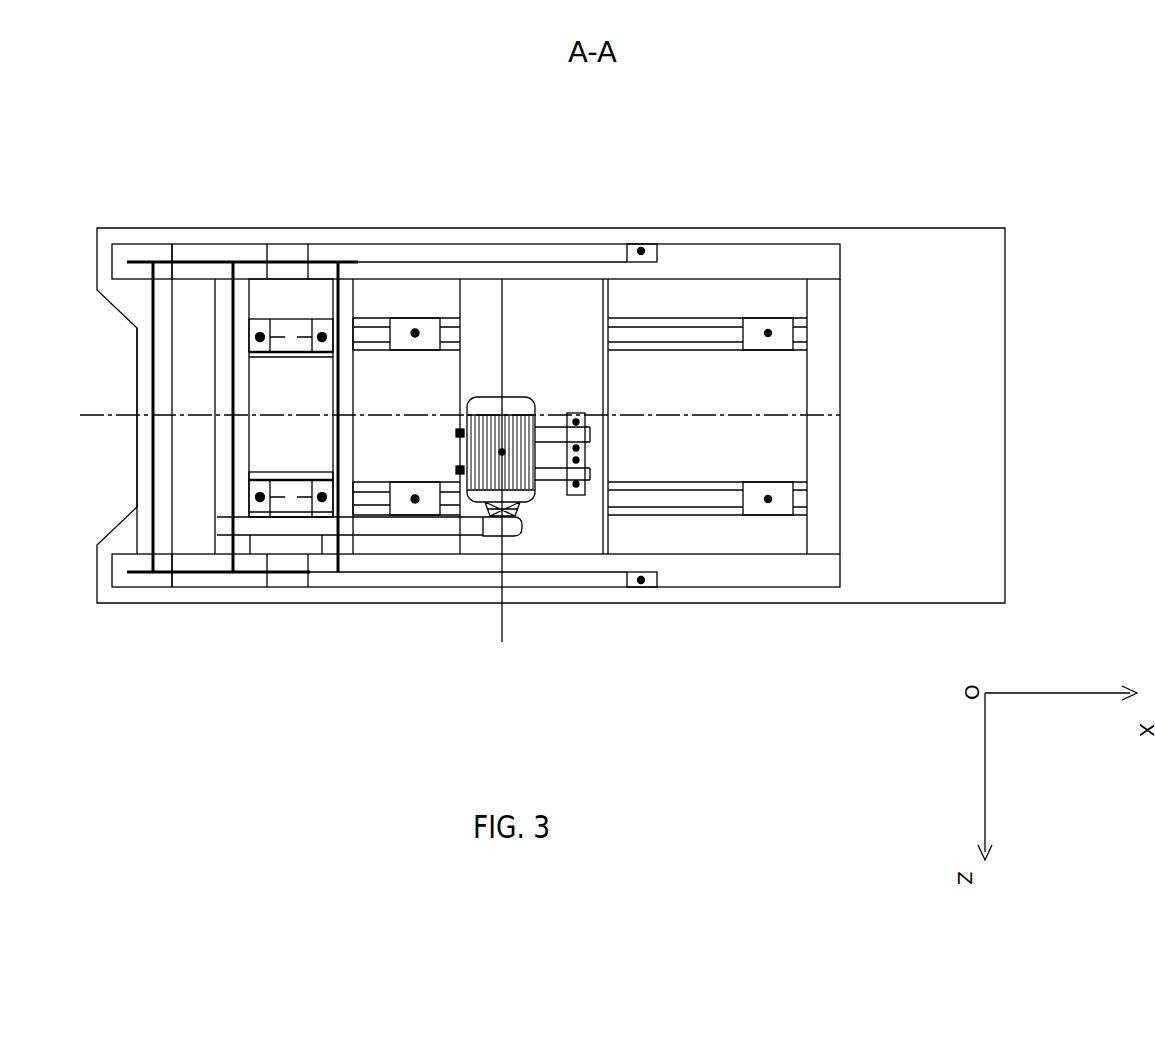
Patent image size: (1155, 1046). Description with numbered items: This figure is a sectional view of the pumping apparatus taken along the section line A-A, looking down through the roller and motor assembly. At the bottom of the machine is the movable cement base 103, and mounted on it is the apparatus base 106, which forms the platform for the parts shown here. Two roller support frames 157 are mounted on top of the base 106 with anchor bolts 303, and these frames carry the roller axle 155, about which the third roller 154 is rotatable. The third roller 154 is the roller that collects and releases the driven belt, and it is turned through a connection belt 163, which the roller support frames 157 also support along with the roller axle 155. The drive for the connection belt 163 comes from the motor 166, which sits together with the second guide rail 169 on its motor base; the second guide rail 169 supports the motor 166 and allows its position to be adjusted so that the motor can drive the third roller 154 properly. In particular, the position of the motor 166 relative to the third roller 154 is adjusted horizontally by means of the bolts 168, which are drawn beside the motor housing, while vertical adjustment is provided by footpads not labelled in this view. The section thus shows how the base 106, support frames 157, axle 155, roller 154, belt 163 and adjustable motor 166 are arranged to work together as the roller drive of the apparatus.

The movable cement base 103 is at (100, 590).
The apparatus base 106 is at (122, 578).
The third roller 154 is at (286, 418).
The roller axle 155 is at (290, 353).
The roller support frame 157 is at (373, 488).
The connection belt 163 is at (390, 523).
The motor 166 is at (525, 413).
The bolts 168 is at (456, 470).
The second guide rail 169 is at (577, 420).
The anchor bolts 303 is at (415, 333).